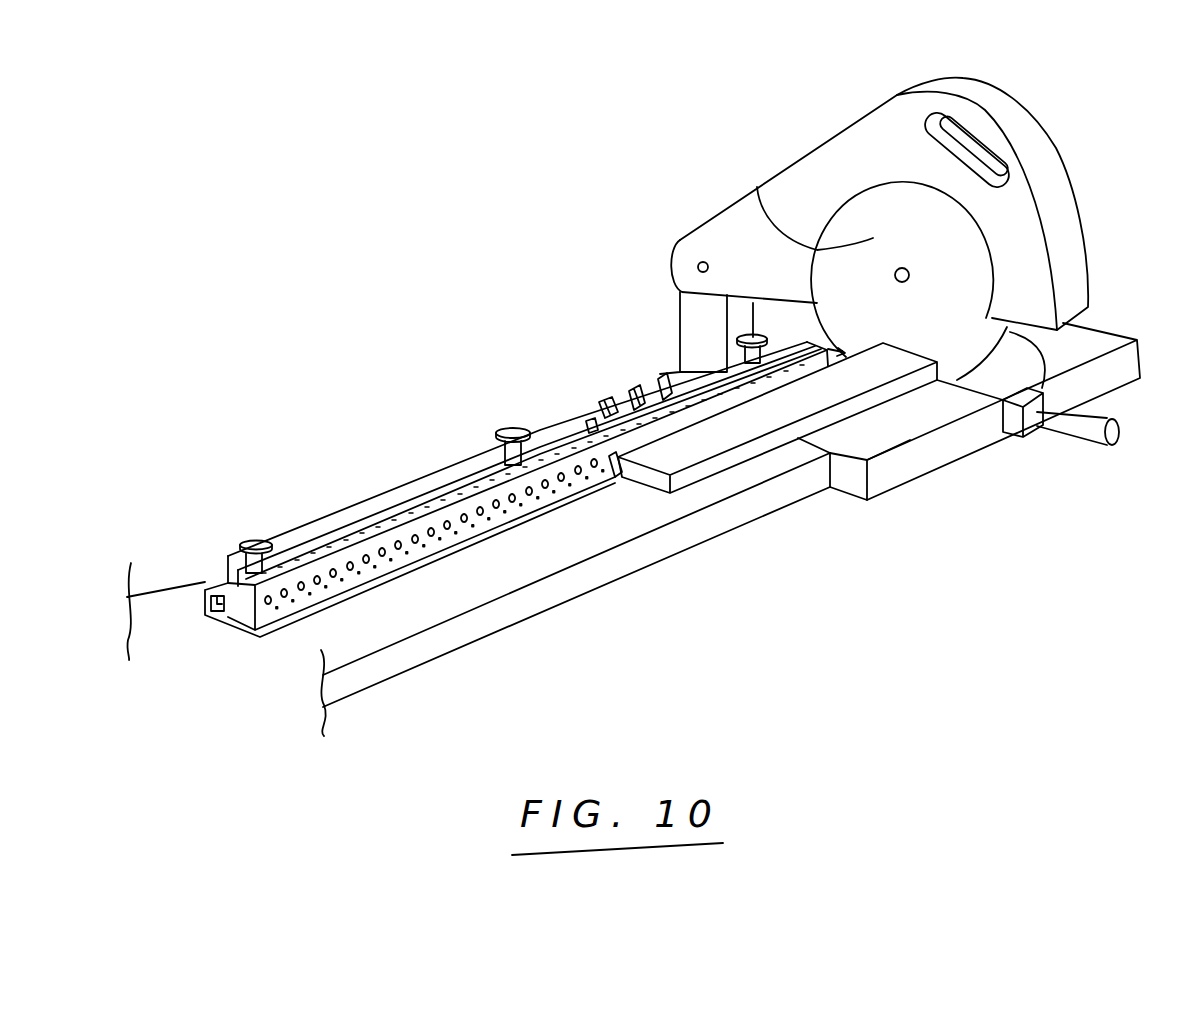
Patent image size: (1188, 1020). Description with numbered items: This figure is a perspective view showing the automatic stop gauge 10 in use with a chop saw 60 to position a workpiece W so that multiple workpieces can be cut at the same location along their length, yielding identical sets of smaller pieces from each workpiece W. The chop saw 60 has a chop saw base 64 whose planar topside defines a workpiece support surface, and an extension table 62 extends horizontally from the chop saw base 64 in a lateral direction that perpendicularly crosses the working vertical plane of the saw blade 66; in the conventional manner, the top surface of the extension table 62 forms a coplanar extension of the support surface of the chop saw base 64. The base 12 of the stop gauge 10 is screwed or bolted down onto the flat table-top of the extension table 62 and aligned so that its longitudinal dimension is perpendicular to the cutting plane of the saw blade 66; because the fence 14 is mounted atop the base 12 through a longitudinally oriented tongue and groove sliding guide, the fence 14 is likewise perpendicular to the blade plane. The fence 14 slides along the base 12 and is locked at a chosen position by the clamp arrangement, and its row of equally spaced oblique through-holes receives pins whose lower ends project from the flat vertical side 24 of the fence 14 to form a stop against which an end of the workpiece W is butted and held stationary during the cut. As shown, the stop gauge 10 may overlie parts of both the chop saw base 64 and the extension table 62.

The automatic stop gauge 10 is at (497, 538).
The base 12 is at (200, 607).
The fence 14 is at (398, 560).
The flat vertical side 24 is at (343, 580).
The chop saw 60 is at (797, 163).
The extension table 62 is at (467, 587).
The chop saw base 64 is at (865, 432).
The saw blade 66 is at (757, 187).
The workpiece W is at (673, 453).